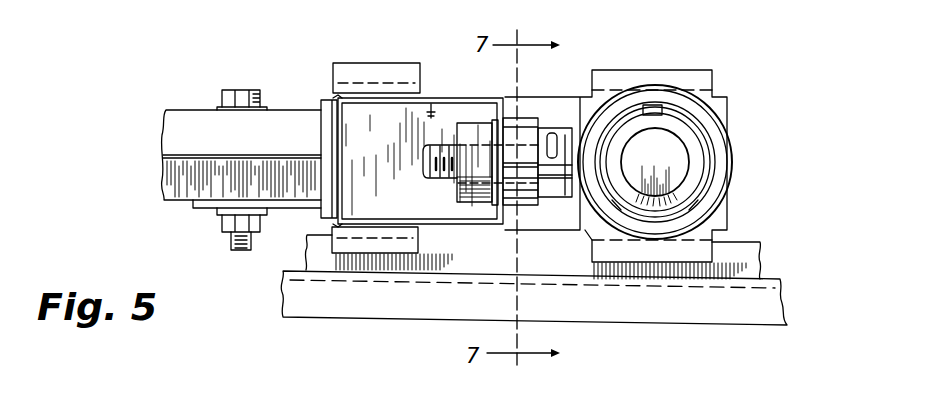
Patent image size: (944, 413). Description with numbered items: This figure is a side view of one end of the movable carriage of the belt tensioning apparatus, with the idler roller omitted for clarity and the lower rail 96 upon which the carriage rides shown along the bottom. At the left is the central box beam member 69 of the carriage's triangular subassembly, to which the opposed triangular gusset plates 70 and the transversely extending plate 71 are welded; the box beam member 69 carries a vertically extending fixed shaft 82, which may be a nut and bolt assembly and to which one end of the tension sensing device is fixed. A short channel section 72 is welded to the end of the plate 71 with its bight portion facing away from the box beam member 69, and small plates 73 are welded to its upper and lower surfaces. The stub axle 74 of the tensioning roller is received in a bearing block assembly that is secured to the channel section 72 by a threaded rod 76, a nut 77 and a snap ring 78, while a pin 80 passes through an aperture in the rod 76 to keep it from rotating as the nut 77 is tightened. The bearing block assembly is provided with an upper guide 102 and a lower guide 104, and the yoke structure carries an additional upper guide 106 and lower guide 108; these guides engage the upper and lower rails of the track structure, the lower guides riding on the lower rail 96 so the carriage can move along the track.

The central box beam member 69 is at (190, 110).
The triangular gusset plates 70 is at (221, 154).
The transversely extending plate 71 is at (320, 106).
The channel section 72 is at (431, 106).
The small plates 73 is at (461, 97).
The stub axle 74 is at (688, 162).
The threaded rod 76 is at (423, 165).
The nut 77 is at (456, 184).
The snap ring 78 is at (541, 128).
The pin 80 is at (594, 93).
The fixed shaft 82 is at (233, 246).
The lower rail 96 is at (770, 278).
The upper guide 102 is at (668, 70).
The lower guide 104 is at (685, 266).
The upper guide 106 is at (398, 63).
The lower guide 108 is at (385, 253).